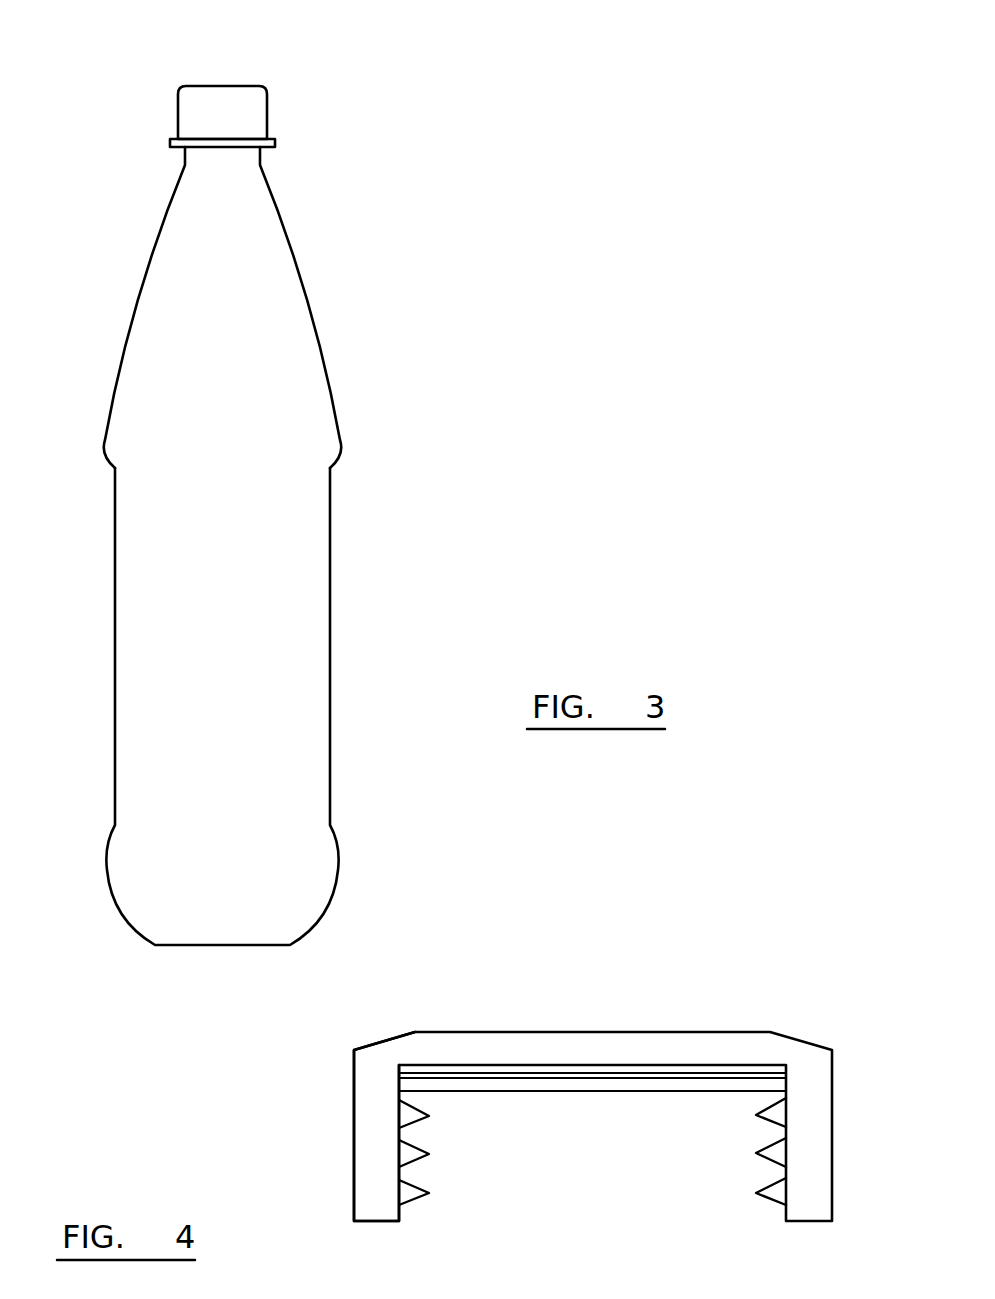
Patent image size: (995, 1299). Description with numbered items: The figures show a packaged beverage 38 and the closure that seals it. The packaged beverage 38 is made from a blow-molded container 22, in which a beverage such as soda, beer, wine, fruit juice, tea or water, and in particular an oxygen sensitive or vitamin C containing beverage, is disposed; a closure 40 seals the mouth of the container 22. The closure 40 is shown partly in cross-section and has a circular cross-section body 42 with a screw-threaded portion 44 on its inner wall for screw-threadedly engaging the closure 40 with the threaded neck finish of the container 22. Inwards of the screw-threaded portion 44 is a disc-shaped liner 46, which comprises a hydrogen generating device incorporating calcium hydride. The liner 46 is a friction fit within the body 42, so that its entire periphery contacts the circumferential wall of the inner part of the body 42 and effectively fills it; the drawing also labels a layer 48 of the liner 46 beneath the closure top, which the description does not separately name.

In FIG. 3, the container 22 is at (331, 577).
In FIG. 3, the packaged beverage 38 is at (335, 388).
In FIG. 3, the closure 40 is at (222, 86).
In FIG. 4, the closure 40 is at (347, 1095).
In FIG. 4, the body 42 is at (373, 1162).
In FIG. 4, the screw-threaded portion 44 is at (430, 1192).
In FIG. 4, the liner 46 is at (592, 1098).
In FIG. 4, the scavenger layer 48 is at (670, 1077).